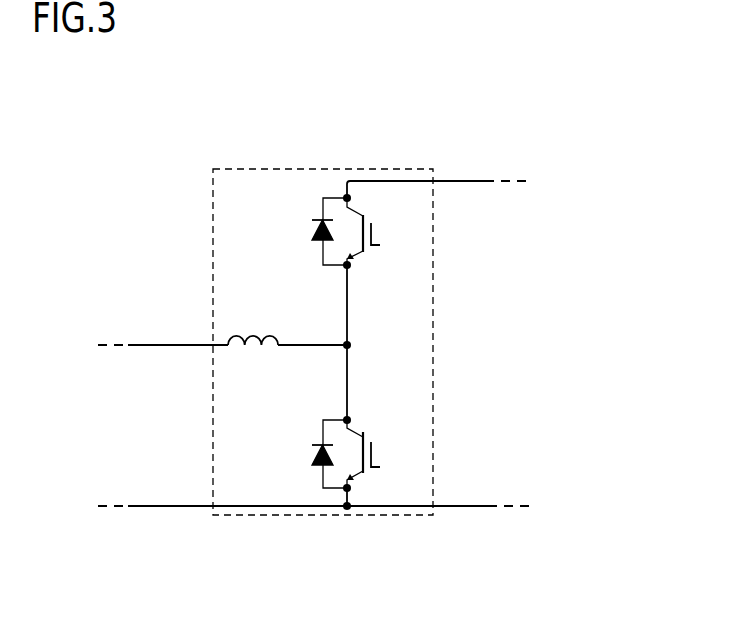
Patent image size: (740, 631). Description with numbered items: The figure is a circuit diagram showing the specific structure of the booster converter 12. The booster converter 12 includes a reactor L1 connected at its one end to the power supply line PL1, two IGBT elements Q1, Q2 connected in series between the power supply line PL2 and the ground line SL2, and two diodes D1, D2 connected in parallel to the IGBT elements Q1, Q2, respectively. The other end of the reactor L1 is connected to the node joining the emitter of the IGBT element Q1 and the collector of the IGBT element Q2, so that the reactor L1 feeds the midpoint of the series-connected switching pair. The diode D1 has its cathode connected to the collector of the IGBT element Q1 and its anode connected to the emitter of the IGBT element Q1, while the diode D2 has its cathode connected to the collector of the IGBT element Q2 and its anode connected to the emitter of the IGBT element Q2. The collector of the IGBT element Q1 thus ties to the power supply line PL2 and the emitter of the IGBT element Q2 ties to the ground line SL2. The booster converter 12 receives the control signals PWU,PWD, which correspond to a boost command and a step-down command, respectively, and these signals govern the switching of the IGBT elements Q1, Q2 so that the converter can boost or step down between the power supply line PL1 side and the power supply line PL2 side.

The booster converter 12 is at (220, 168).
The power supply line PL1 is at (165, 343).
The power supply line PL2 is at (471, 179).
The ground line SL2 is at (165, 504).
The reactor L1 is at (253, 325).
The diode D1 is at (309, 231).
The diode D2 is at (310, 454).
The IGBT element Q1 is at (380, 231).
The IGBT element Q2 is at (380, 454).
The control signals PWU,PWD is at (366, 520).